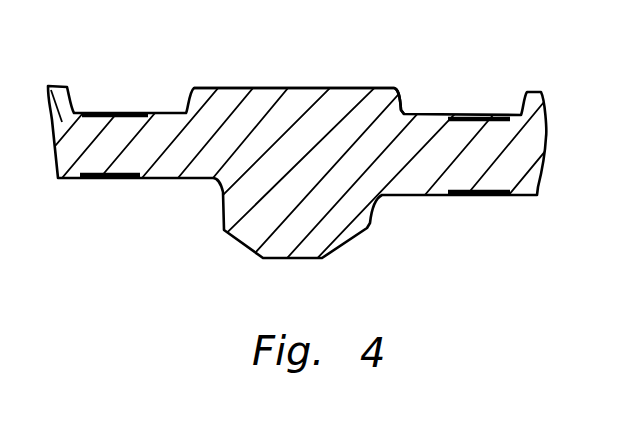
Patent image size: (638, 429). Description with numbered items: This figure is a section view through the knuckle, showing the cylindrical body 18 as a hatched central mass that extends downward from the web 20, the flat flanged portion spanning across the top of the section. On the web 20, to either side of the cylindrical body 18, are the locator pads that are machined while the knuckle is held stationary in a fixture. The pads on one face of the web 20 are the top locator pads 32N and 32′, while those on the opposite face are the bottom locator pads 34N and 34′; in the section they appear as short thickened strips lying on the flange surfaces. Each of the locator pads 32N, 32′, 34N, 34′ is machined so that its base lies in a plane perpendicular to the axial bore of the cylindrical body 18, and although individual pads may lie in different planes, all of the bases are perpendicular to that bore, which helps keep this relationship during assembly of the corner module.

The cylindrical body 18 is at (218, 220).
The web 20 is at (425, 113).
The bottom locator pad 34N is at (92, 112).
The top locator pad 32N is at (97, 180).
The bottom locator pad 34′ is at (458, 117).
The top locator pad 32′ is at (473, 198).